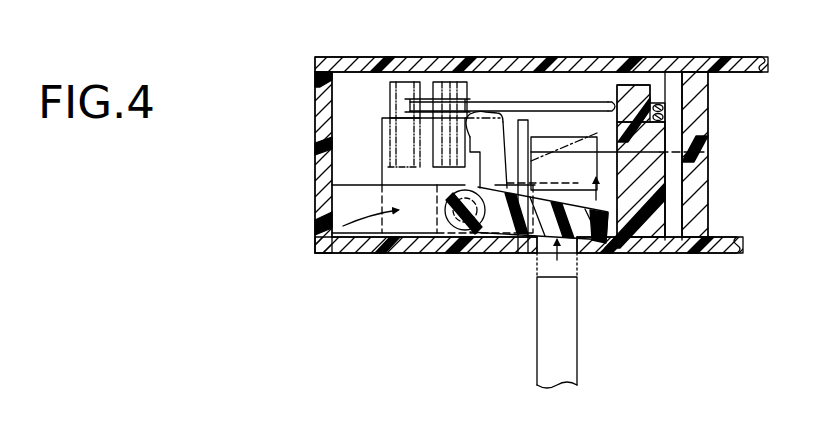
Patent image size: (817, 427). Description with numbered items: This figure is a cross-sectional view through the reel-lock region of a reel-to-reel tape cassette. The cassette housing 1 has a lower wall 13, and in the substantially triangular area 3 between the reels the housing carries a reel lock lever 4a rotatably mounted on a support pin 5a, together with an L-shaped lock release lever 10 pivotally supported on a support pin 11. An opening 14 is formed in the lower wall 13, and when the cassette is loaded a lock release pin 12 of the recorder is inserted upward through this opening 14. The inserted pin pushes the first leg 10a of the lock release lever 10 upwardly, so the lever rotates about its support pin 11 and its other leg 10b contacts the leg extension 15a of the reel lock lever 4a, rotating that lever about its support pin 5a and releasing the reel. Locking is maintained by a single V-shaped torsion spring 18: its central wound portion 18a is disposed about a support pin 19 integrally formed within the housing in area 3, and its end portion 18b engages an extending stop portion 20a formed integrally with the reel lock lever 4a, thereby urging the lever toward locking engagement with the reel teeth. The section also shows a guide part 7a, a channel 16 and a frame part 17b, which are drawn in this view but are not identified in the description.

The cassette housing 1 is at (323, 171).
The substantially triangular area 3 is at (323, 252).
The reel lock lever 4a is at (512, 128).
The support pin 5a is at (402, 82).
The guide bar 7a is at (529, 124).
The lock release lever 10 is at (520, 243).
The first leg of lock release lever 10a is at (600, 250).
The leg of lock release lever 10b is at (488, 116).
The support pin 11 is at (443, 246).
The lock release pin 12 is at (536, 300).
The lower wall 13 is at (398, 246).
The opening 14 is at (578, 250).
The leg extension 15a is at (405, 112).
The channel 16 is at (688, 218).
The frame 17b is at (480, 152).
The V-shaped torsion spring 18 is at (630, 85).
The wound portion 18a is at (670, 98).
The end portion 18b is at (597, 101).
The support pin 19 is at (660, 104).
The extending stop portion 20a is at (478, 110).